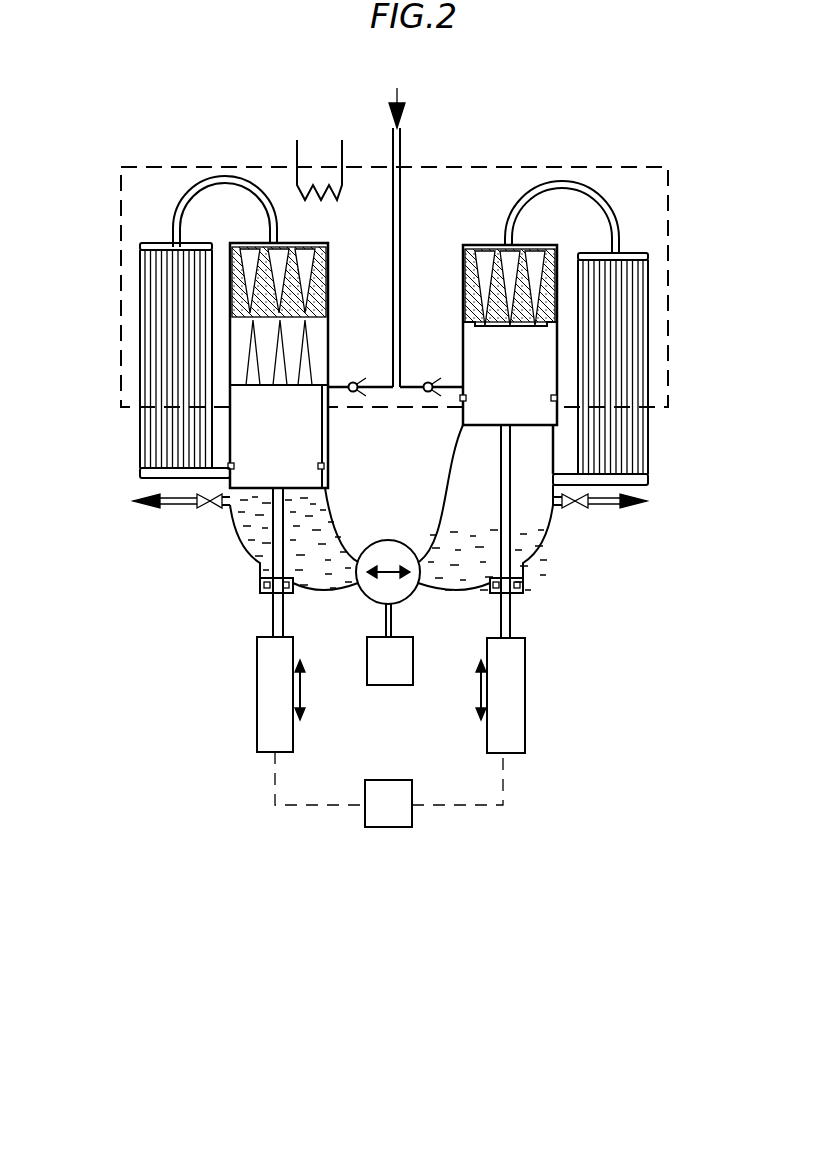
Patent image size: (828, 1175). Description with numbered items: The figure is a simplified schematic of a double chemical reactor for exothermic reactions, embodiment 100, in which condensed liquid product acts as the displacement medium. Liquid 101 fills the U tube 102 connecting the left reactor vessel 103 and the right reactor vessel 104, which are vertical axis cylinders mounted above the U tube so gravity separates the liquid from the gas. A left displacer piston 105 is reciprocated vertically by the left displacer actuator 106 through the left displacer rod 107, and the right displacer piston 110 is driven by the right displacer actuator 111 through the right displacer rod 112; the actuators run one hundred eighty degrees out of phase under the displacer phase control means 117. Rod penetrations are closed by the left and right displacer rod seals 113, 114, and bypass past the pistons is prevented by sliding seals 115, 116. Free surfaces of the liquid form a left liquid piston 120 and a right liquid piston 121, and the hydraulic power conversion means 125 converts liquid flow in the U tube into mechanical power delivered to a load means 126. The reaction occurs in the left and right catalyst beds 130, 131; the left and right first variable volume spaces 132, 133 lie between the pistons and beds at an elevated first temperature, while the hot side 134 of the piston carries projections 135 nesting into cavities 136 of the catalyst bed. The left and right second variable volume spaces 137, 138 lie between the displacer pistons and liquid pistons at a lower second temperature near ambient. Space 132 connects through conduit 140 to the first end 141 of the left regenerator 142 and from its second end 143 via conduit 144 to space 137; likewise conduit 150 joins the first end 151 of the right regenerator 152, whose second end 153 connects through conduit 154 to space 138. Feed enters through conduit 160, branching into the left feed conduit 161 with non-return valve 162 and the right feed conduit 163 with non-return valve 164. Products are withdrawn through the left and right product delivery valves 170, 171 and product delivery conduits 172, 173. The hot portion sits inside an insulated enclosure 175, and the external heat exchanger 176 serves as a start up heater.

The embodiment 100 is at (312, 80).
The liquid 101 is at (314, 549).
The U tube 102 is at (364, 546).
The left reactor vessel 103 is at (324, 452).
The right reactor vessel 104 is at (485, 480).
The left displacer piston 105 is at (301, 472).
The left displacer actuator 106 is at (258, 692).
The left displacer rod 107 is at (272, 615).
The right displacer piston 110 is at (490, 413).
The right displacer actuator 111 is at (526, 694).
The right displacer rod 112 is at (511, 618).
The left displacer rod seal 113 is at (262, 585).
The right displacer rod seal 114 is at (523, 588).
The sliding seal 115 is at (323, 467).
The sliding seal 116 is at (466, 402).
The displacer phase control means 117 is at (374, 781).
The left liquid piston 120 is at (261, 500).
The right liquid piston 121 is at (523, 500).
The hydraulic power conversion means 125 is at (378, 603).
The load means 126 is at (374, 686).
The left catalyst bed 130 is at (322, 250).
The right catalyst bed 131 is at (465, 272).
The left first variable volume space 132 is at (318, 340).
The right first variable volume space 133 is at (463, 322).
The hot side 134 is at (318, 384).
The projections 135 is at (279, 331).
The cavities 136 is at (278, 288).
The left second variable volume space 137 is at (322, 492).
The right second variable volume space 138 is at (490, 493).
The conduit 140 is at (194, 189).
The first end 141 is at (137, 247).
The left regenerator 142 is at (133, 306).
The second end 143 is at (140, 472).
The conduit 144 is at (160, 497).
The conduit 150 is at (602, 199).
The first end 151 is at (647, 250).
The right regenerator 152 is at (650, 310).
The second end 153 is at (645, 485).
The conduit 154 is at (592, 487).
The conduit 160 is at (402, 208).
The left feed conduit 161 is at (387, 396).
The non-return valve 162 is at (371, 392).
The right feed conduit 163 is at (405, 386).
The non-return valve 164 is at (440, 392).
The left product delivery valve 170 is at (207, 514).
The right product delivery valve 171 is at (570, 510).
The product delivery conduit 172 is at (178, 504).
The product delivery conduit 173 is at (603, 507).
The insulated enclosure 175 is at (540, 167).
The external heat exchanger 176 is at (297, 141).